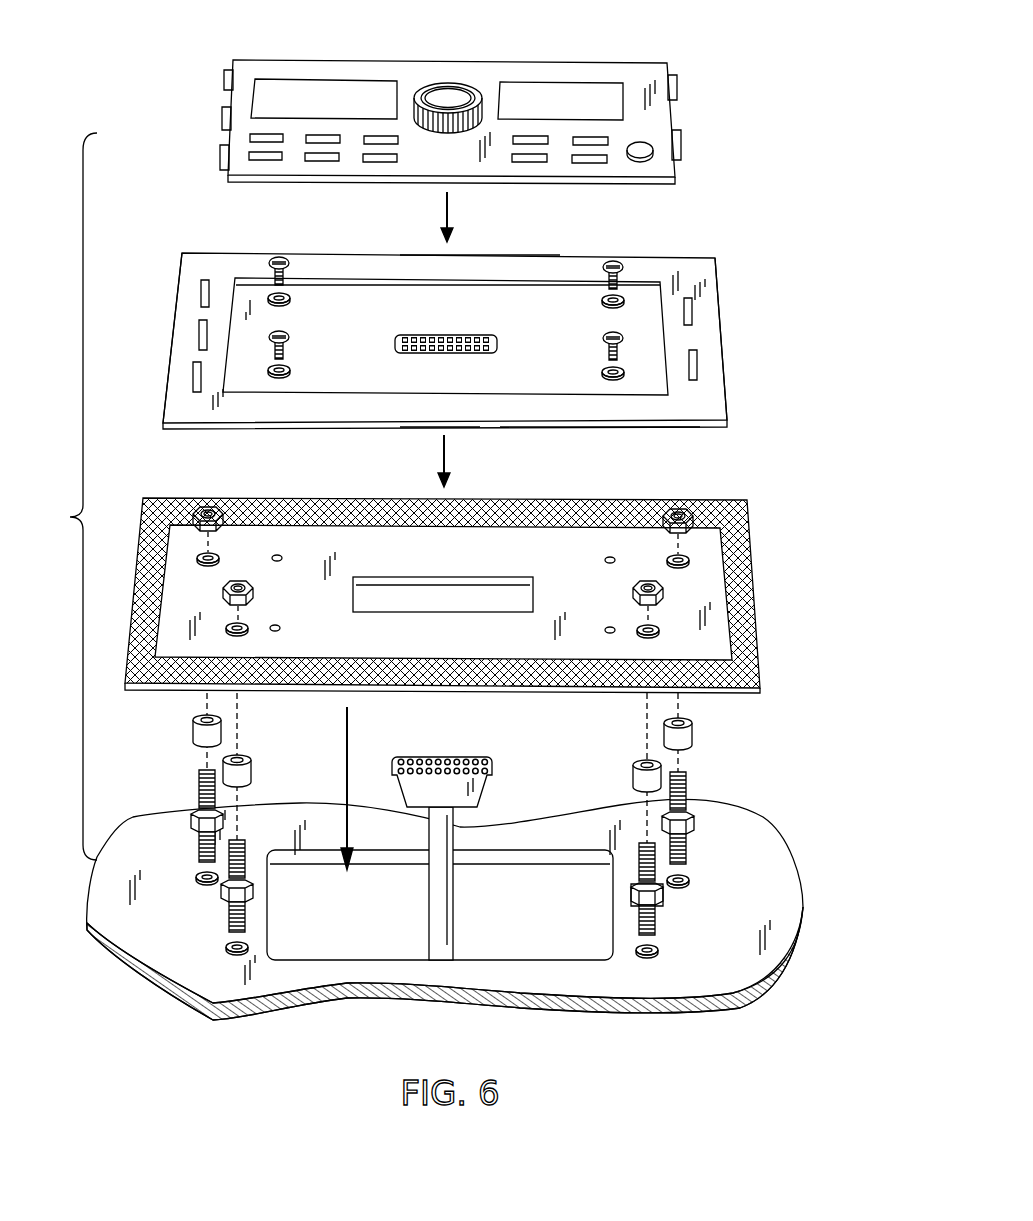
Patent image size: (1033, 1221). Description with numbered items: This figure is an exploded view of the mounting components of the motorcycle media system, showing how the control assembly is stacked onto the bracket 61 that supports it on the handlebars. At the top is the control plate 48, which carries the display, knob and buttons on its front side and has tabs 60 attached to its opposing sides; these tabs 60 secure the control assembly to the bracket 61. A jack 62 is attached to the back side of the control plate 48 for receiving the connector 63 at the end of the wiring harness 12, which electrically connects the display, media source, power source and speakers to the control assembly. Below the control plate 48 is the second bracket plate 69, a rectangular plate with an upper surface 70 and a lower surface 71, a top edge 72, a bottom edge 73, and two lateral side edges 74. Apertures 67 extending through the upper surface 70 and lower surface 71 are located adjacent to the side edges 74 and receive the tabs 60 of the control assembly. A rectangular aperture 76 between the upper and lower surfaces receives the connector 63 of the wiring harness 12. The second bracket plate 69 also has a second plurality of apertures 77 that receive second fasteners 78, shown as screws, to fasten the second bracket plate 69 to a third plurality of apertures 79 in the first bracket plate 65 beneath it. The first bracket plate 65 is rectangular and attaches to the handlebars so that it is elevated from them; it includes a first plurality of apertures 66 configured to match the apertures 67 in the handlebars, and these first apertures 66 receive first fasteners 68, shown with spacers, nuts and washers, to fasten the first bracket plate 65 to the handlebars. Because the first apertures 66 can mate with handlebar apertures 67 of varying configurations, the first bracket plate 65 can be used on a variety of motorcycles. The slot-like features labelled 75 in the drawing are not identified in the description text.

The wiring harness 12 is at (453, 948).
The control plate 48 is at (460, 62).
The tabs 60 is at (676, 77).
The bracket 61 is at (59, 496).
The jack 62 is at (493, 335).
The connector 63 is at (487, 757).
The first bracket plate 65 is at (748, 503).
The first plurality of apertures 66 is at (660, 630).
The apertures 67 is at (644, 957).
The first fasteners 68 is at (656, 925).
The second bracket plate 69 is at (715, 258).
The upper surface 70 is at (673, 275).
The lower surface 71 is at (683, 428).
The top edge 72 is at (480, 255).
The bottom edge 73 is at (490, 428).
The lateral side edges 74 is at (720, 285).
The slots 75 is at (692, 352).
The rectangular aperture 76 is at (354, 578).
The second plurality of apertures 77 is at (607, 725).
The second fasteners 78 is at (686, 790).
The third plurality of apertures 79 is at (612, 346).